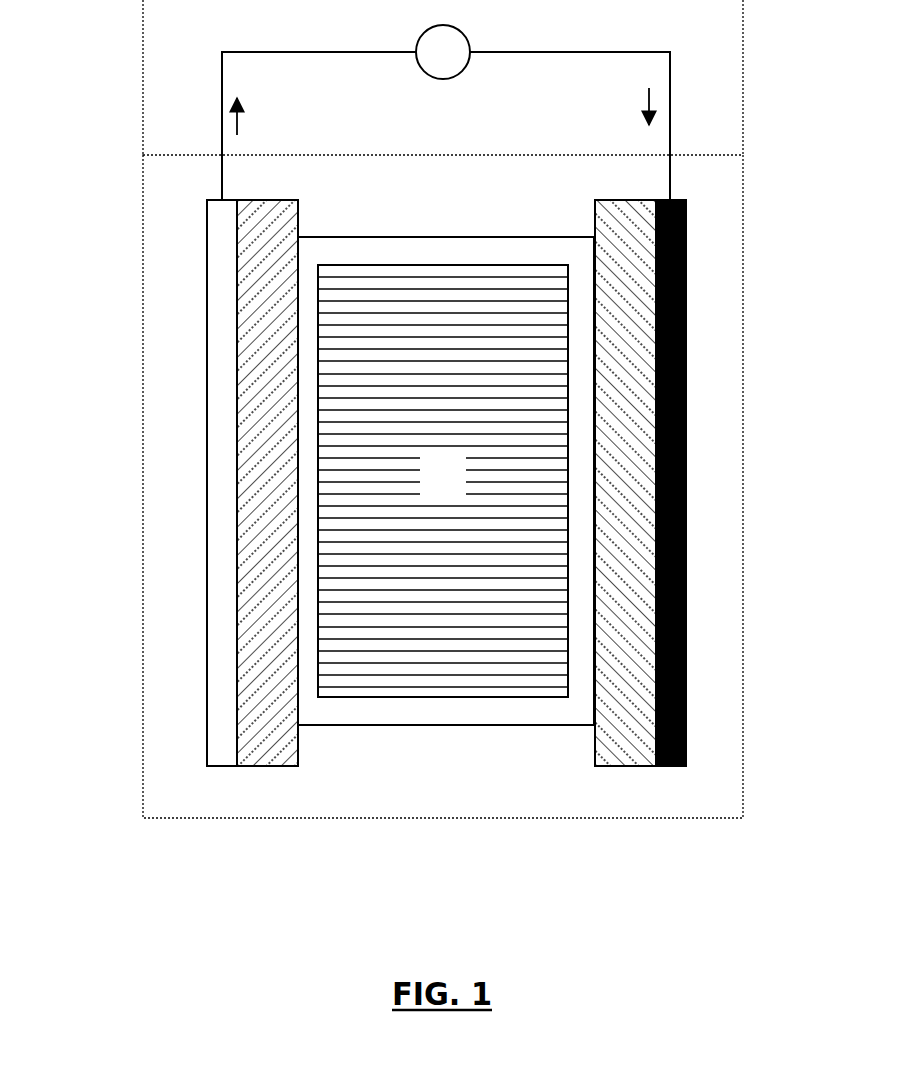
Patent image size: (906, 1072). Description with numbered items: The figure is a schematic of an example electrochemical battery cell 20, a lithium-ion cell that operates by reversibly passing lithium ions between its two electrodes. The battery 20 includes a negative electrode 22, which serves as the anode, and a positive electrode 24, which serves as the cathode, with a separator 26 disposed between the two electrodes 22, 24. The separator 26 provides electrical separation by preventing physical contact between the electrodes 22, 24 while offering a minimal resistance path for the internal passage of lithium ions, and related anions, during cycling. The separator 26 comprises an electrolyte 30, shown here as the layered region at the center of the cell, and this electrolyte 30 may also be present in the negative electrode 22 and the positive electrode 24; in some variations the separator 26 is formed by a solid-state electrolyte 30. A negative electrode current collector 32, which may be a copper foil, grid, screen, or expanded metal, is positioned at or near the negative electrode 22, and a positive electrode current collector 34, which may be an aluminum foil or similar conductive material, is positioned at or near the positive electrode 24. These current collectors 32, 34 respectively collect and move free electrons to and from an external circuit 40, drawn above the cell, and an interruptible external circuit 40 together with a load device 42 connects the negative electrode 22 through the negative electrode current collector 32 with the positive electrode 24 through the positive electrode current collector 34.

The electrochemical cell 20 is at (138, 234).
The negative electrode 22 is at (625, 766).
The positive electrode 24 is at (268, 766).
The separator 26 is at (445, 725).
The electrolyte 30 is at (443, 481).
The negative electrode current collector 32 is at (686, 482).
The positive electrode current collector 34 is at (207, 482).
The external circuit 40 is at (138, 72).
The load device 42 is at (446, 112).